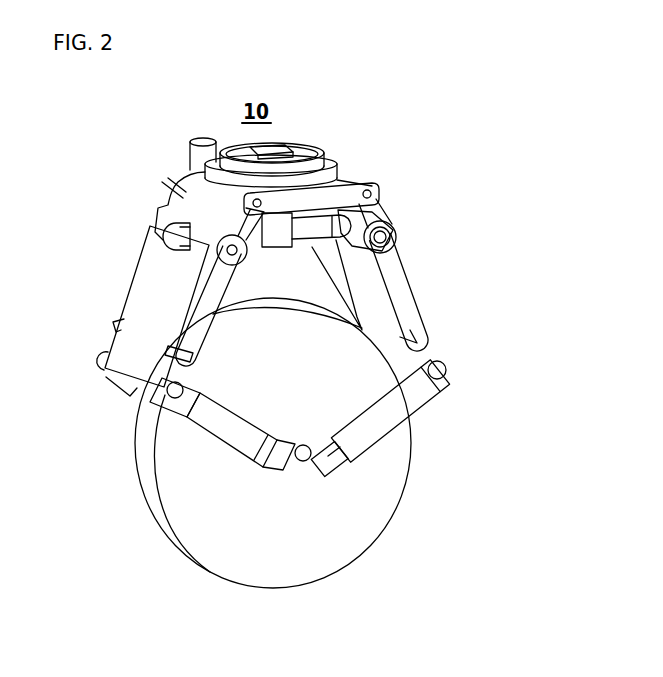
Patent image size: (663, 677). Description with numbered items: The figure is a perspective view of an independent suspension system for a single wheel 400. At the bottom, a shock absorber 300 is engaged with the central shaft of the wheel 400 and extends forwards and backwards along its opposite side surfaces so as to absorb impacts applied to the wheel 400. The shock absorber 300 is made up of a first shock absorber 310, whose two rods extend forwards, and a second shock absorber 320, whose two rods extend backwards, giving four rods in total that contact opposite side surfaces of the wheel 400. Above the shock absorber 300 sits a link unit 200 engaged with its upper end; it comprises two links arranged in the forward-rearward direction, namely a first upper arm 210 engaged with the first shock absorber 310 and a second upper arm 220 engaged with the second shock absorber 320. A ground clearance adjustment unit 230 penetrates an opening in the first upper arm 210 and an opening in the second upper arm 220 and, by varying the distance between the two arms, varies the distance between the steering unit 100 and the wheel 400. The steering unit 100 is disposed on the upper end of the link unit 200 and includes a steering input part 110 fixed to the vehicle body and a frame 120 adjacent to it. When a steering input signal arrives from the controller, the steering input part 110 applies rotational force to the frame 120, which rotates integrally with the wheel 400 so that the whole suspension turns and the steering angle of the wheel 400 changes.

The steering unit 100 is at (271, 164).
The steering input part 110 is at (190, 156).
The frame 120 is at (328, 150).
The link unit 200 is at (397, 236).
The first upper arm 210 is at (408, 290).
The second upper arm 220 is at (128, 296).
The ground clearance adjustment unit 230 is at (302, 229).
The shock absorber 300 is at (423, 418).
The first shock absorber 310 is at (392, 410).
The second shock absorber 320 is at (208, 428).
The wheel 400 is at (350, 512).